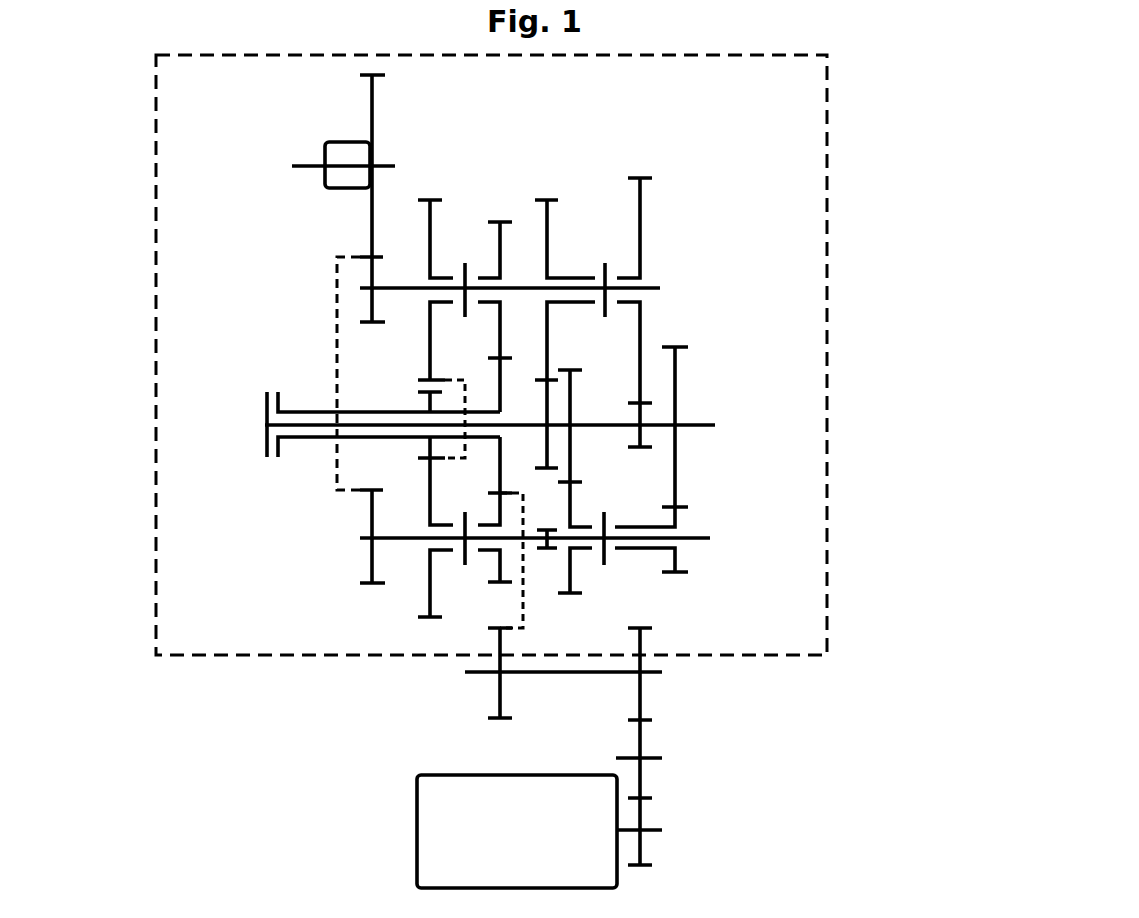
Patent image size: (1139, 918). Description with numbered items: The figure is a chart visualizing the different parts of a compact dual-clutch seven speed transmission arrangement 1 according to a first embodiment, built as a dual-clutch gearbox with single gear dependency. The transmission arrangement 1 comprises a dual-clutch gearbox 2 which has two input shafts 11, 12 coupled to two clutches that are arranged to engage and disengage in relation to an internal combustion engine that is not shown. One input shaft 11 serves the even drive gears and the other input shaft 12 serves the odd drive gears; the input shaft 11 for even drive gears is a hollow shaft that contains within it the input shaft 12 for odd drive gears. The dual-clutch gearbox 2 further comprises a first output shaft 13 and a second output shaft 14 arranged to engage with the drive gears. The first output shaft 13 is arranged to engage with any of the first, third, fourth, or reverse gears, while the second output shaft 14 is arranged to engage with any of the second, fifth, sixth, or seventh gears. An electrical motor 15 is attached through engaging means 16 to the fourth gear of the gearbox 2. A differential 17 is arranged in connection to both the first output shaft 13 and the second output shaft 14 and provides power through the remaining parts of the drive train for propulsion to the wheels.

The compact dual-clutch seven speed transmission arrangement 1 is at (982, 350).
The dual-clutch gearbox 2 is at (827, 191).
The input shaft for even drive gears 11 is at (320, 438).
The input shaft for odd drive gears 12 is at (268, 428).
The first output shaft 13 is at (660, 288).
The second output shaft 14 is at (710, 538).
The electrical motor 15 is at (417, 828).
The engaging means 16 is at (662, 758).
The differential 17 is at (330, 195).